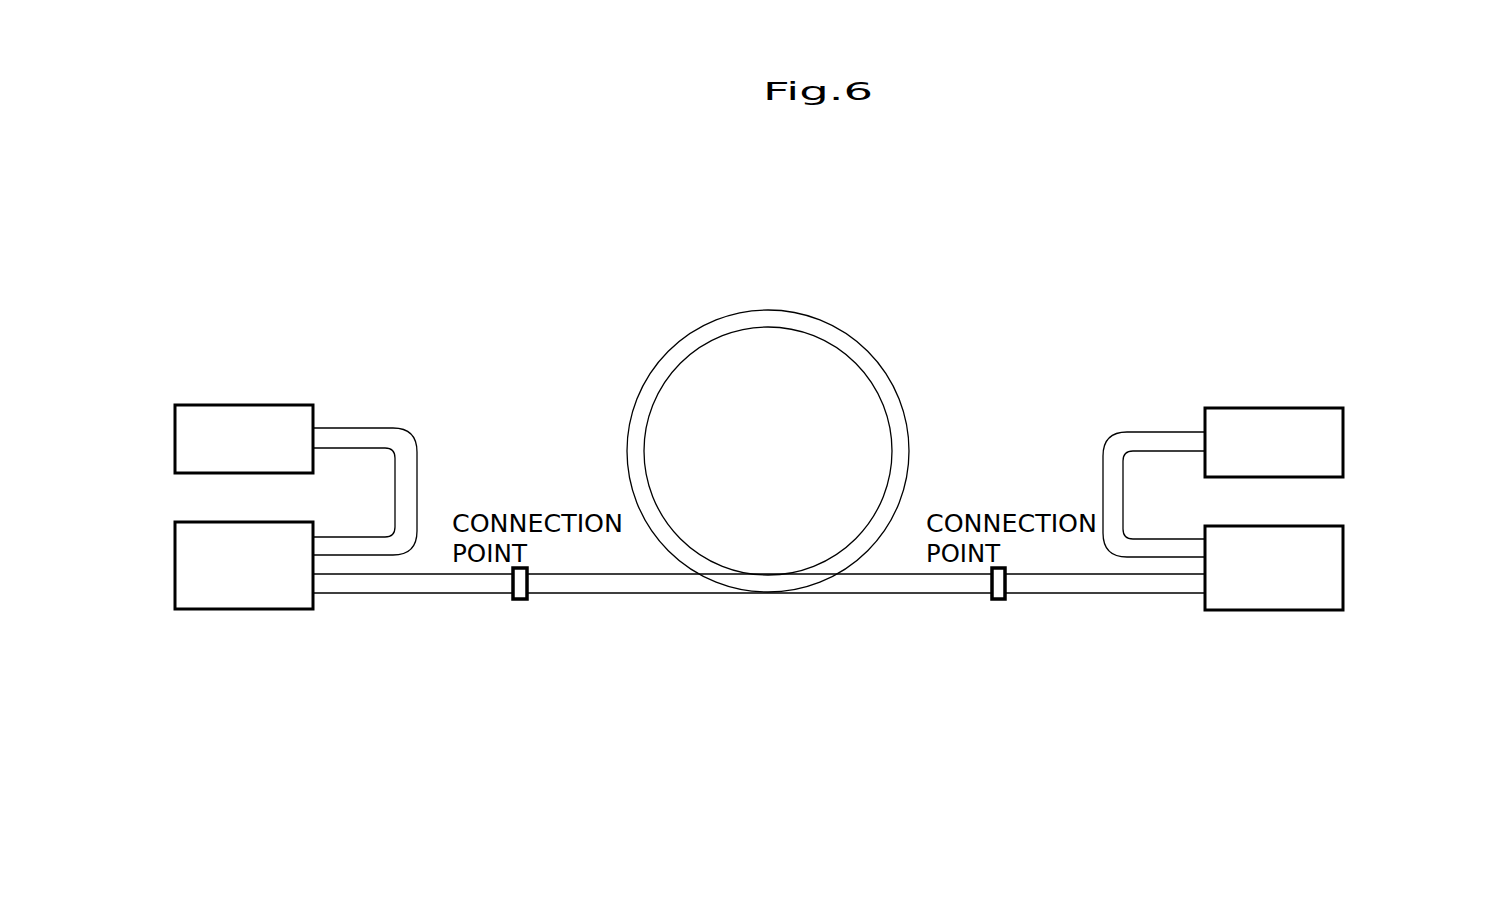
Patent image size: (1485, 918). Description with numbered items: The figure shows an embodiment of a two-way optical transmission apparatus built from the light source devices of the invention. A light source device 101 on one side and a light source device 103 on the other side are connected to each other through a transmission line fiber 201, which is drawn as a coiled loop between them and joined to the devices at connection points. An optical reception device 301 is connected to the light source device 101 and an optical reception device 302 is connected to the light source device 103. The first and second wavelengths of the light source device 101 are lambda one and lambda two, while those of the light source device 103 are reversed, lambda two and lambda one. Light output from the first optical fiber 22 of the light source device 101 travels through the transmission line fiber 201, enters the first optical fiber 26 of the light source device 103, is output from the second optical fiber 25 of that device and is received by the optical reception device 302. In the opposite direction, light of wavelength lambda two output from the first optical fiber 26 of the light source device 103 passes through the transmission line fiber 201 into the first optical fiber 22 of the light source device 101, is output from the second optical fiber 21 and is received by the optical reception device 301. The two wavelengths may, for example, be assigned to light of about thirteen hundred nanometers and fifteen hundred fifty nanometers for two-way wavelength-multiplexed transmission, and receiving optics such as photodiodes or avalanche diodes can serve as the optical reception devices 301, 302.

The optical reception device 301 is at (248, 405).
The optical reception device 302 is at (1277, 408).
The light source device 101 is at (230, 610).
The light source device 103 is at (1277, 610).
The second optical fiber 21 is at (407, 548).
The first optical fiber 22 is at (373, 596).
The second optical fiber 25 is at (1110, 550).
The first optical fiber 26 is at (1170, 596).
The transmission line fiber 201 is at (792, 310).